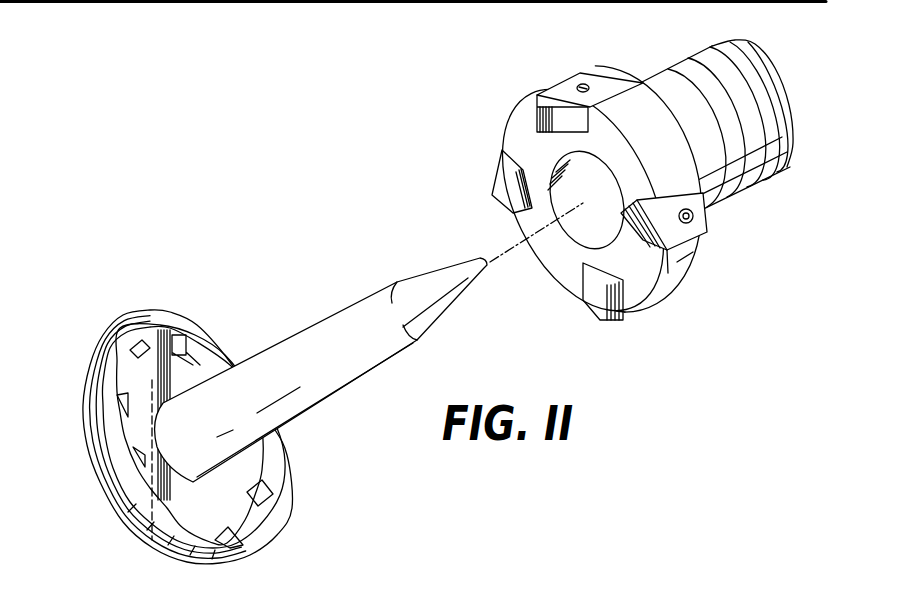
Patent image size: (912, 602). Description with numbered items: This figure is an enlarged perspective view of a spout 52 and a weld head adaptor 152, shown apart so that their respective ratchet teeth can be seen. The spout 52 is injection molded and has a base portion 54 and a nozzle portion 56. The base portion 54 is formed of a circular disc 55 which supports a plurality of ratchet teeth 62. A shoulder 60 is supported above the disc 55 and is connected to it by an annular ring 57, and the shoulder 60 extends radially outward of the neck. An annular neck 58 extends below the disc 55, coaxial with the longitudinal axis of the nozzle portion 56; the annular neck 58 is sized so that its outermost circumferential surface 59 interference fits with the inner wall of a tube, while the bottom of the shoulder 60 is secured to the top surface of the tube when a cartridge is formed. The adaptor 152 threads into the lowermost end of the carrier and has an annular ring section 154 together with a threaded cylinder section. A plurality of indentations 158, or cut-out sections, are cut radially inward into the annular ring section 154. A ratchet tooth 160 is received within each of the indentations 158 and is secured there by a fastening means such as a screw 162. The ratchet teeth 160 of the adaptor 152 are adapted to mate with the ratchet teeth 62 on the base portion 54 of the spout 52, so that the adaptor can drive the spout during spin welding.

The spout 52 is at (321, 351).
The base portion 54 is at (183, 413).
The circular disc 55 is at (122, 423).
The nozzle portion 56 is at (353, 365).
The annular ring 57 is at (268, 462).
The annular neck 58 is at (92, 372).
The outermost circumferential surface 59 is at (85, 400).
The shoulder 60 is at (279, 519).
The ratchet teeth 62 is at (181, 340).
The adaptor 152 is at (700, 59).
The annular ring section 154 is at (612, 187).
The indentations 158 is at (695, 243).
The ratchet tooth 160 is at (572, 92).
The screw 162 is at (587, 82).